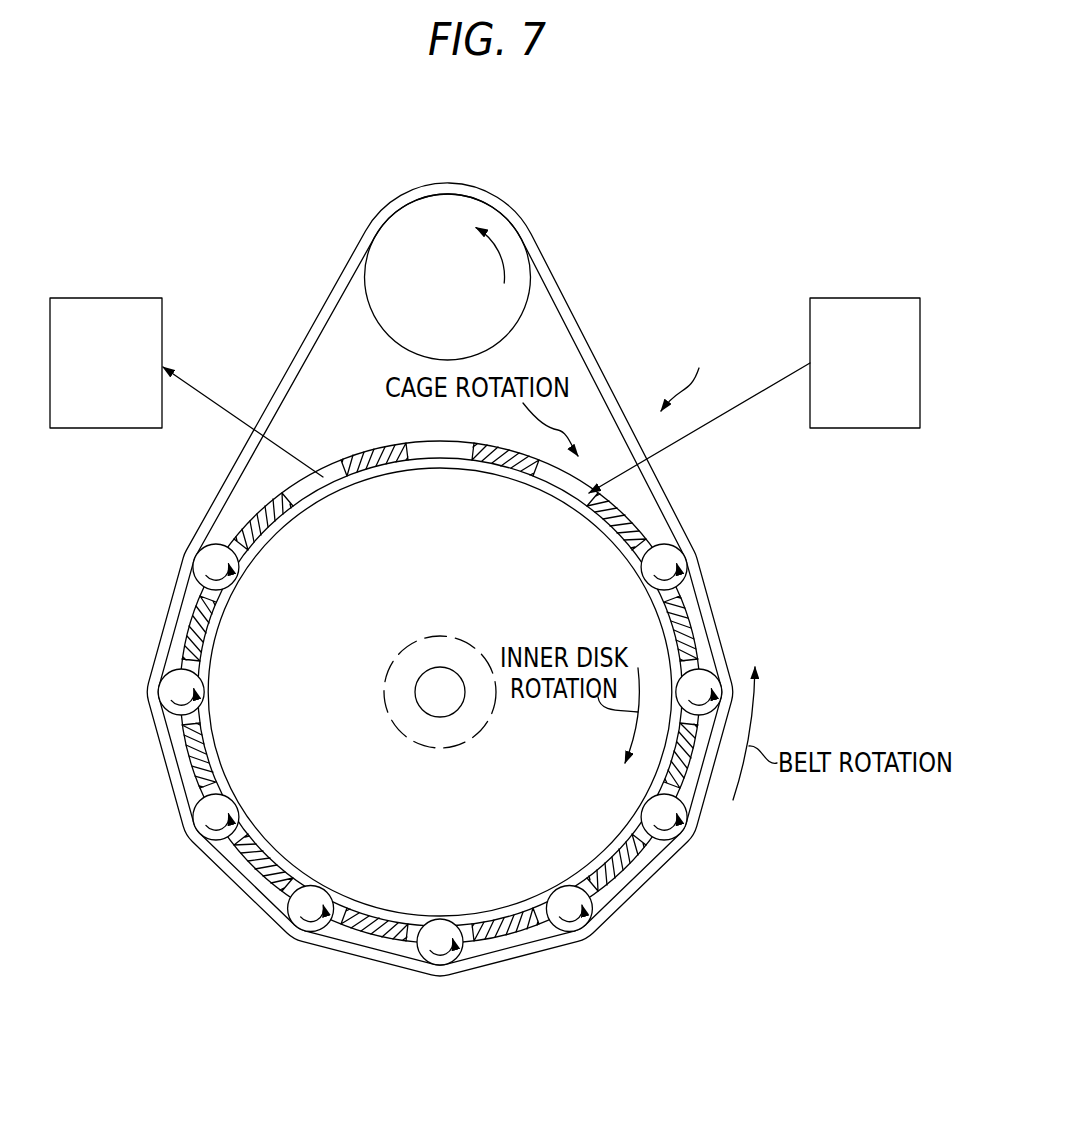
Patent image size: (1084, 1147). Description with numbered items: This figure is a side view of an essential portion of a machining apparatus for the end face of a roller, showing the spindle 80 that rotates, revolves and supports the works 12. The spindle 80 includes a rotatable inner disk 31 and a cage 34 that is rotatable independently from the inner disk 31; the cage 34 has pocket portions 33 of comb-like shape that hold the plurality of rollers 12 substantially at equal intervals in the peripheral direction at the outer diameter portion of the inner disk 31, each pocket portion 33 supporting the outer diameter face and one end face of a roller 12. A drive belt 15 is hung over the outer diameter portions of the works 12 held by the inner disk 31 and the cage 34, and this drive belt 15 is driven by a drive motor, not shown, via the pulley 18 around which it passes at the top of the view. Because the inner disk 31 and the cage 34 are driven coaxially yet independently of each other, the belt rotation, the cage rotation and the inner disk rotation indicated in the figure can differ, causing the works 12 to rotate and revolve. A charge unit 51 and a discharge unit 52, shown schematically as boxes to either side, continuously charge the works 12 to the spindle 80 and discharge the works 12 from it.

The work 12 is at (667, 557).
The drive belt 15 is at (487, 579).
The pulley 18 is at (409, 226).
The inner disk 31 is at (715, 642).
The pocket portion 33 is at (480, 691).
The cage 34 is at (643, 530).
The charge unit 51 is at (881, 312).
The discharge unit 52 is at (105, 314).
The spindle 80 is at (687, 375).